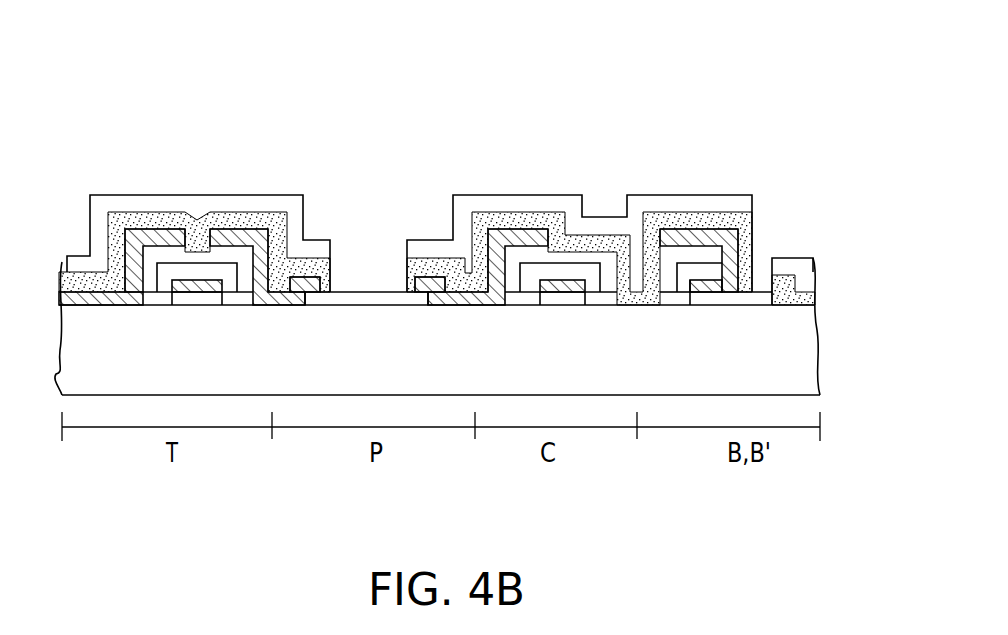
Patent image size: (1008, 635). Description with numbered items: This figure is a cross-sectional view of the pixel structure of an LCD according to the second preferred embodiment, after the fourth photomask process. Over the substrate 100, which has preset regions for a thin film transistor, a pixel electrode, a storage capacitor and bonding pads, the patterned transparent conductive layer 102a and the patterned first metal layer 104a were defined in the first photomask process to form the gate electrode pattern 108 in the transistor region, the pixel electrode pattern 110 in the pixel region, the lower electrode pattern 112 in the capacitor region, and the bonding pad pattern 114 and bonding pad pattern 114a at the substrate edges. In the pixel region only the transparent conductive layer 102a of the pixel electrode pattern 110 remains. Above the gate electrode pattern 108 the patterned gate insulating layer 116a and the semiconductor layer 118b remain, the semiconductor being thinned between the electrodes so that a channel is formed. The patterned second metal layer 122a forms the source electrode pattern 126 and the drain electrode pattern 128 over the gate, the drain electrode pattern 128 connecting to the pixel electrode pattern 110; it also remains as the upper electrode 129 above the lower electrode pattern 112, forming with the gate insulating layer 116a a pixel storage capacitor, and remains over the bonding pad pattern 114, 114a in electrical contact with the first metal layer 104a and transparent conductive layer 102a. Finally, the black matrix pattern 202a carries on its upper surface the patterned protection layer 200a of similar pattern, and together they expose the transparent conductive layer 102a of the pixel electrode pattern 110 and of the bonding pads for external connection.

The substrate 100 is at (780, 369).
The patterned transparent conductive layer 102a is at (783, 310).
The patterned first metal layer 104a is at (698, 300).
The gate electrode pattern 108 is at (204, 274).
The pixel electrode pattern 110 is at (368, 282).
The lower electrode pattern 112 is at (557, 273).
The bonding pad pattern 114 is at (747, 283).
The bonding pad pattern 114a is at (447, 286).
The patterned gate insulating layer 116a is at (236, 300).
The semiconductor layer 118b is at (147, 276).
The patterned second metal layer 122a is at (688, 252).
The source electrode pattern 126 is at (153, 226).
The drain electrode pattern 128 is at (231, 226).
The upper electrode 129 is at (520, 224).
The patterned protection layer 200a is at (197, 210).
The black matrix pattern 202a is at (118, 222).